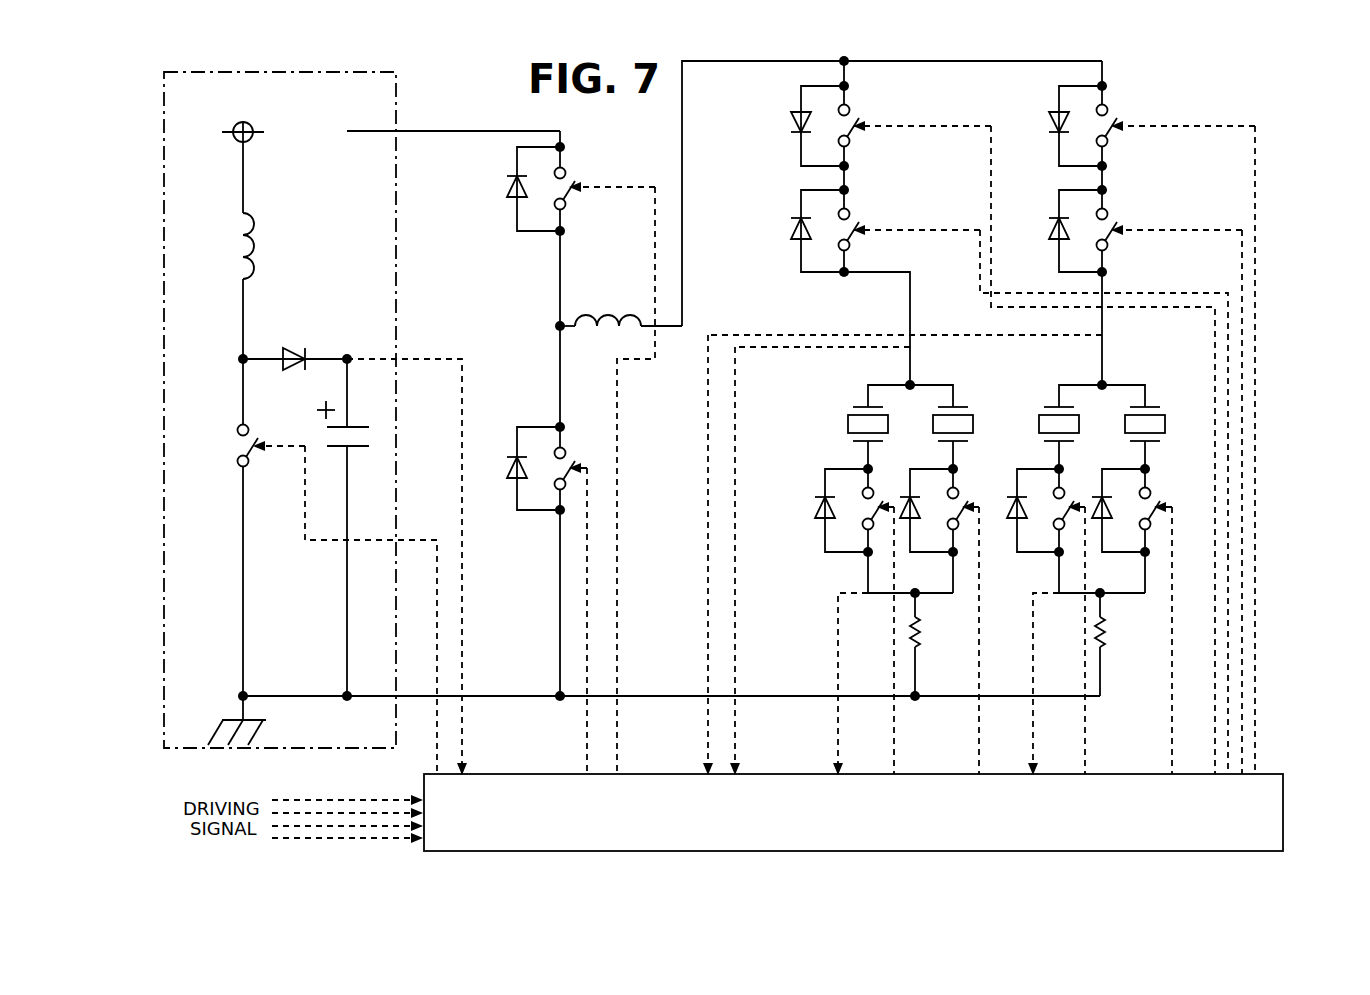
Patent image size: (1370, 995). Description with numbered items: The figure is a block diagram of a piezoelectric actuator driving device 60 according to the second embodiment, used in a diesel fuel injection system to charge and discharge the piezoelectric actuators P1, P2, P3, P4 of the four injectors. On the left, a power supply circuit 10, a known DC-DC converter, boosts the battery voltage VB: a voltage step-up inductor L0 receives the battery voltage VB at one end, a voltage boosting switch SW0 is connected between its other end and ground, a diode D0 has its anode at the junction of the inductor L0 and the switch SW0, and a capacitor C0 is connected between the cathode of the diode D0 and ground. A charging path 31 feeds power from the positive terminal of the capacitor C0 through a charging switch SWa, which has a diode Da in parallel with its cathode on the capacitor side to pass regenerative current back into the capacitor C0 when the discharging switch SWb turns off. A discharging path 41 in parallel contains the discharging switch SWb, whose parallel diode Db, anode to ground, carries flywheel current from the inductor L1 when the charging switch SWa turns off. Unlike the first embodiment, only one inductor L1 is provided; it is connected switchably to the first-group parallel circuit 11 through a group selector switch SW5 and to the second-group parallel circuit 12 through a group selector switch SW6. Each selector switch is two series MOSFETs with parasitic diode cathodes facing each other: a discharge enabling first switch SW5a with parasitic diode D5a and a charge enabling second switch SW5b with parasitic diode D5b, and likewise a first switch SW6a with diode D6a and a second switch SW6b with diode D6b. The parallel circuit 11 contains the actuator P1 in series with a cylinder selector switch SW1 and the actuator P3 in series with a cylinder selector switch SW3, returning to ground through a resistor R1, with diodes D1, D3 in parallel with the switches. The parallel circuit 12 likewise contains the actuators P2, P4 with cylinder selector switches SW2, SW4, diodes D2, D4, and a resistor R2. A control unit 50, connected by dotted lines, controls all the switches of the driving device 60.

The power supply circuit 10 is at (396, 80).
The battery voltage VB is at (243, 118).
The voltage step-up inductor L0 is at (258, 237).
The diode D0 is at (298, 350).
The voltage boosting switch SW0 is at (257, 430).
The capacitor C0 is at (354, 426).
The diode Da is at (507, 186).
The charging switch SWa is at (575, 176).
The charging path 31 is at (581, 251).
The inductor L1 is at (626, 304).
The discharging path 41 is at (540, 401).
The diode Db is at (507, 466).
The discharging switch SWb is at (575, 458).
The piezoelectric actuator driving device 60 is at (1294, 124).
The group selector switch SW5 is at (879, 220).
The first switch SW5a is at (857, 124).
The second switch SW5b is at (857, 227).
The parasitic diode D5a is at (792, 126).
The parasitic diode D5b is at (792, 230).
The group selector switch SW6 is at (1140, 223).
The first switch SW6a is at (1115, 124).
The second switch SW6b is at (1115, 227).
The parasitic diode D6a is at (1050, 126).
The parasitic diode D6b is at (1050, 230).
The parallel circuit 11 is at (933, 366).
The parallel circuit 12 is at (1123, 366).
The piezoelectric actuator P1 is at (856, 405).
The piezoelectric actuator P2 is at (1047, 405).
The piezoelectric actuator P3 is at (963, 405).
The piezoelectric actuator P4 is at (1156, 405).
The cylinder selector switch SW1 is at (882, 486).
The cylinder selector switch SW2 is at (1073, 486).
The cylinder selector switch SW3 is at (967, 486).
The cylinder selector switch SW4 is at (1159, 486).
The diode D1 is at (822, 526).
The diode D2 is at (1014, 526).
The diode D3 is at (918, 526).
The diode D4 is at (1099, 526).
The resistor R1 is at (922, 633).
The resistor R2 is at (1105, 633).
The control unit 50 is at (918, 775).